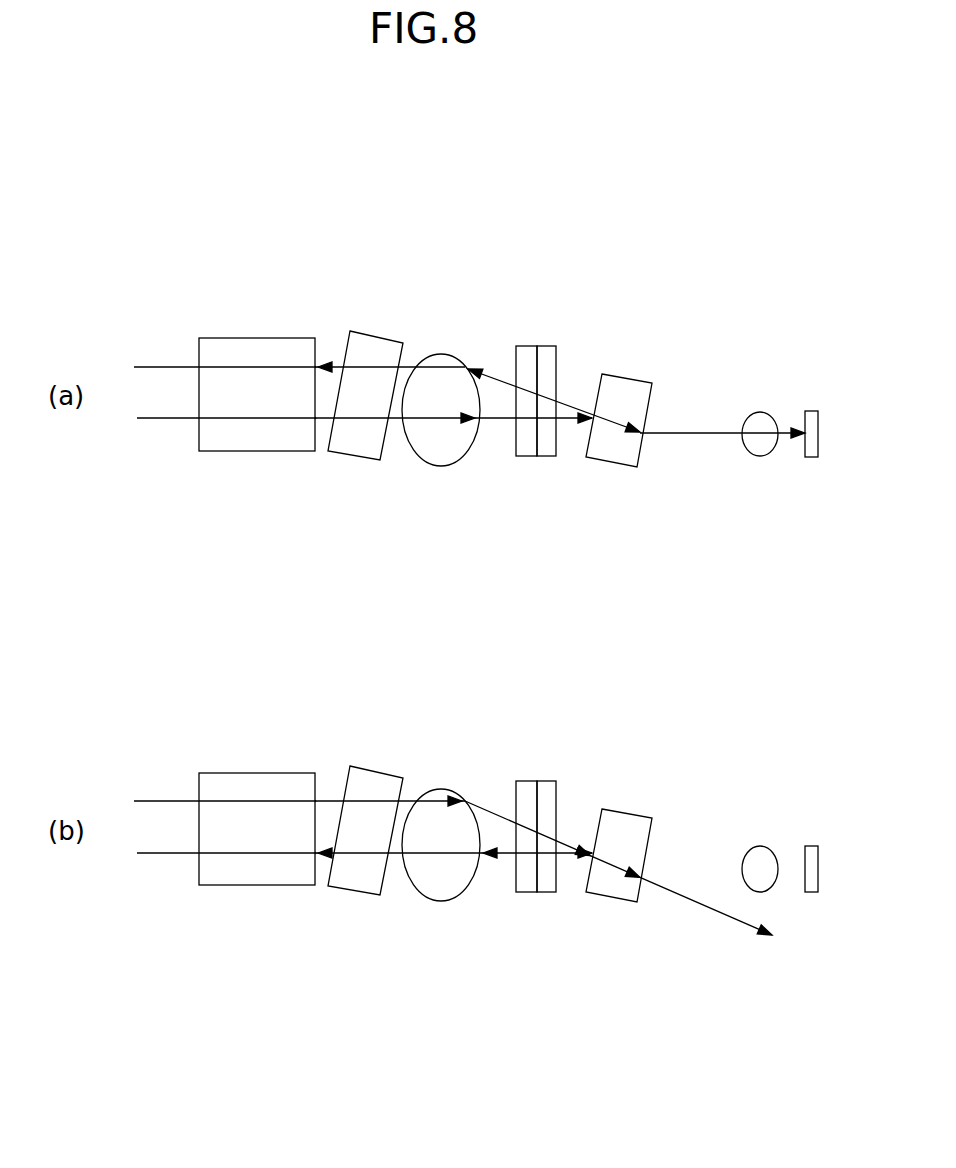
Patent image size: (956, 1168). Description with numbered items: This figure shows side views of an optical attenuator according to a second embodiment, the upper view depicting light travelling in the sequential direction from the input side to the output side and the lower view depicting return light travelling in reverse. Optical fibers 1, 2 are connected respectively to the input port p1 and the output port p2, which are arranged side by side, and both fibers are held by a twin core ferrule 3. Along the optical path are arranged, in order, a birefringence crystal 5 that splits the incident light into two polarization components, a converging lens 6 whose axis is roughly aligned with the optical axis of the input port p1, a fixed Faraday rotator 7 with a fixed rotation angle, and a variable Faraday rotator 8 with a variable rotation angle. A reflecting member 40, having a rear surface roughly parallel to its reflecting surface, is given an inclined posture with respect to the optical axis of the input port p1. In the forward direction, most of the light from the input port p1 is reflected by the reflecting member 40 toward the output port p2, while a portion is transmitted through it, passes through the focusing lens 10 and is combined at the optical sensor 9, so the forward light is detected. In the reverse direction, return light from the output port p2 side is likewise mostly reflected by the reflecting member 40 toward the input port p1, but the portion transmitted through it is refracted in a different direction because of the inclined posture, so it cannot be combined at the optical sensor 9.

The optical fiber 1 is at (162, 420).
The optical fiber 2 is at (158, 365).
The twin core ferrule 3 is at (250, 338).
The input port p1 is at (318, 420).
The output port p2 is at (318, 360).
The birefringence crystal 5 is at (365, 331).
The converging lens 6 is at (437, 355).
The fixed Faraday rotator 7 is at (525, 346).
The variable Faraday rotator 8 is at (548, 346).
The reflecting member 40 is at (625, 374).
The focusing lens 10 is at (758, 412).
The optical sensor 9 is at (808, 411).